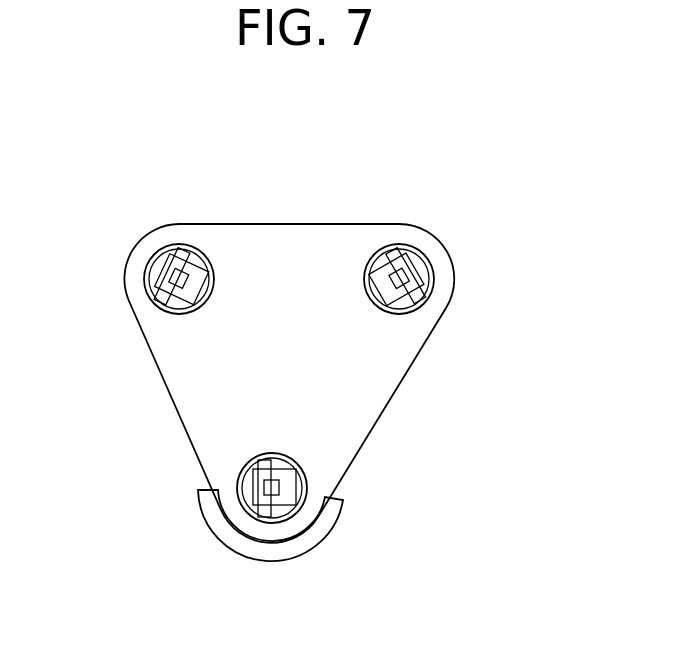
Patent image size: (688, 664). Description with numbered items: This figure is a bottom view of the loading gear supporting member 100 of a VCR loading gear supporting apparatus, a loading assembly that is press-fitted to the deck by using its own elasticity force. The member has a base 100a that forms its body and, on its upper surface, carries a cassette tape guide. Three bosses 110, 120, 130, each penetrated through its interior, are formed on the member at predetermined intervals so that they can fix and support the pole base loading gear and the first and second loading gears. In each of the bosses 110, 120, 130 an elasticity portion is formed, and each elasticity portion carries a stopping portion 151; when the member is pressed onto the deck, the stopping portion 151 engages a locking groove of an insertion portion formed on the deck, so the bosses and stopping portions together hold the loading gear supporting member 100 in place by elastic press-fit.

The loading gear supporting member 100 is at (430, 370).
The base 100a is at (180, 355).
The boss 110 is at (307, 485).
The boss 120 is at (424, 261).
The boss 130 is at (185, 245).
The stopping portion 151 is at (267, 490).